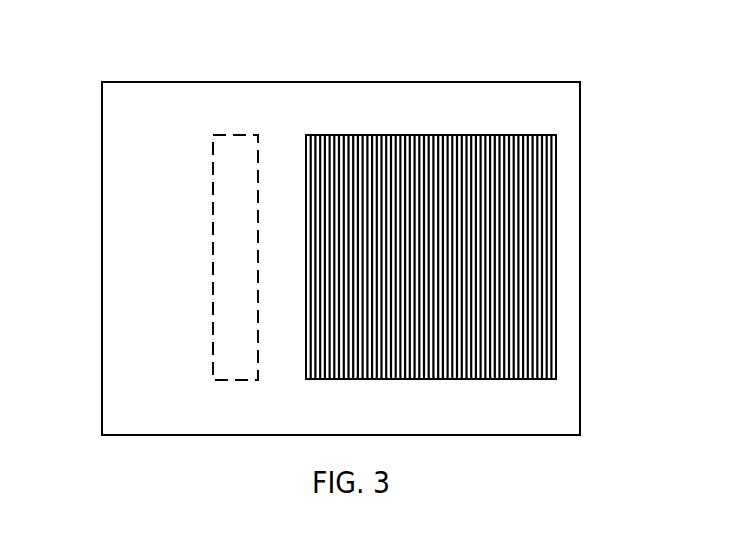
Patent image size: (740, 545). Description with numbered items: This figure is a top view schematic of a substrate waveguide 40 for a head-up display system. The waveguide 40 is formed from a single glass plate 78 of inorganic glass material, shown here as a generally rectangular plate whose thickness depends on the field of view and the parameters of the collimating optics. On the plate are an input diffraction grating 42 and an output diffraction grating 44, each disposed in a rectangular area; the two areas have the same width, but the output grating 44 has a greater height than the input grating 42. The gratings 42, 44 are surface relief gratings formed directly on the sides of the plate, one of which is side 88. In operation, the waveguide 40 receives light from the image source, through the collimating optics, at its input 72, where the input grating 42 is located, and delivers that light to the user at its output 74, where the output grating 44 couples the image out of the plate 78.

The substrate waveguide 40 is at (573, 105).
The input diffraction grating 42 is at (232, 144).
The output diffraction grating 44 is at (556, 177).
The input 72 is at (220, 212).
The output 74 is at (503, 157).
The single glass plate 78 is at (580, 398).
The side 88 is at (182, 417).